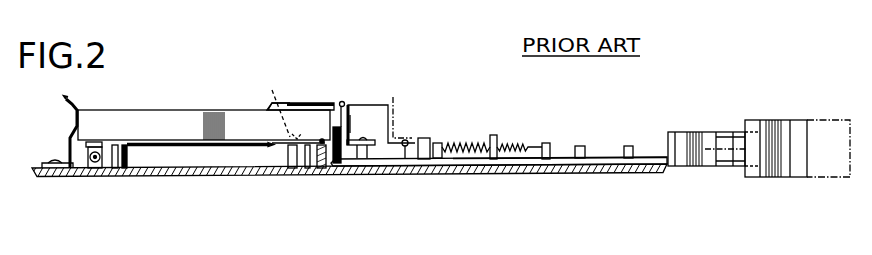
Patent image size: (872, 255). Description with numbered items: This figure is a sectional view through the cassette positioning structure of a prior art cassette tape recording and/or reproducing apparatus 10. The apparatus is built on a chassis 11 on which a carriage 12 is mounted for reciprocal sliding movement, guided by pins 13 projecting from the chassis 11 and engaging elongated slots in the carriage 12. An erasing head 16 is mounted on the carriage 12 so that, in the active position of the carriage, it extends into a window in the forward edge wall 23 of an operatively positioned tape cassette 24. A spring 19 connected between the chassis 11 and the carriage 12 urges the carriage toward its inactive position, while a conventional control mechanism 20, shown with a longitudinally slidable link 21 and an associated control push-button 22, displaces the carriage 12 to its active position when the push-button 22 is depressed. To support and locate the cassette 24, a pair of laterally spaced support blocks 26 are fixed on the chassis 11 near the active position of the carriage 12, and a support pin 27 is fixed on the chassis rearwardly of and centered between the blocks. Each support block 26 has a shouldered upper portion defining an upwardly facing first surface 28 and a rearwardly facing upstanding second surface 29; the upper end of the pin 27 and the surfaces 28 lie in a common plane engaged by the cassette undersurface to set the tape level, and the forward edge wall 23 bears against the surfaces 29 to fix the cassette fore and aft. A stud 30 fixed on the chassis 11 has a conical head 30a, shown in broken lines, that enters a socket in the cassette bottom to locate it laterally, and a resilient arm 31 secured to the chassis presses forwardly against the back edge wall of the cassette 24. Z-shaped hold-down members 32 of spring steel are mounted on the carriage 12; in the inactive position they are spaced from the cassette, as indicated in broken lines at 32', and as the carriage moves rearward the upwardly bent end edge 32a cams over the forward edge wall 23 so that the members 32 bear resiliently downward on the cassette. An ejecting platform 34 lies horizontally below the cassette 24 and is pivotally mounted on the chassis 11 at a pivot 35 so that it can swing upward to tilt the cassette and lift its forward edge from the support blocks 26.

The cassette tape recording and/or reproducing apparatus 10 is at (386, 90).
The chassis 11 is at (218, 169).
The carriage 12 is at (395, 164).
The pins 13 is at (425, 138).
The erasing head 16 is at (351, 122).
The spring 19 is at (500, 142).
The control mechanism 20 is at (693, 166).
The link 21 is at (600, 157).
The control push-button 22 is at (766, 121).
The forward edge wall 23 is at (336, 108).
The tape cassette 24 is at (181, 110).
The support blocks 26 is at (337, 163).
The support pin 27 is at (128, 166).
The first surface 28 is at (323, 158).
The second upstanding surface 29 is at (322, 138).
The stud 30 is at (289, 152).
The conical head 30a is at (284, 89).
The resilient arm 31 is at (70, 140).
The hold-down members 32 is at (300, 88).
The upwardly bent end edge 32a is at (288, 104).
The hold-down member inactive position 32' is at (413, 110).
The platform 34 is at (176, 147).
The pivot 35 is at (96, 163).